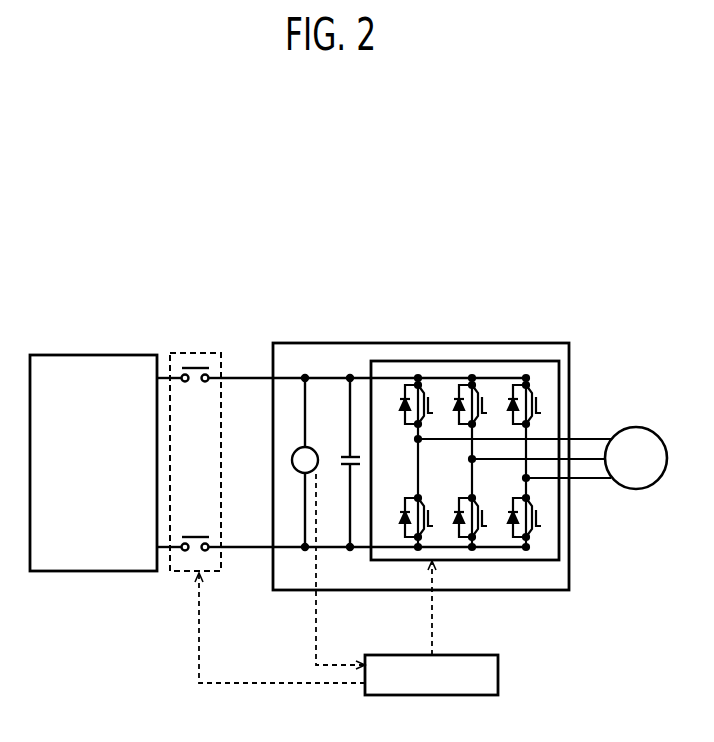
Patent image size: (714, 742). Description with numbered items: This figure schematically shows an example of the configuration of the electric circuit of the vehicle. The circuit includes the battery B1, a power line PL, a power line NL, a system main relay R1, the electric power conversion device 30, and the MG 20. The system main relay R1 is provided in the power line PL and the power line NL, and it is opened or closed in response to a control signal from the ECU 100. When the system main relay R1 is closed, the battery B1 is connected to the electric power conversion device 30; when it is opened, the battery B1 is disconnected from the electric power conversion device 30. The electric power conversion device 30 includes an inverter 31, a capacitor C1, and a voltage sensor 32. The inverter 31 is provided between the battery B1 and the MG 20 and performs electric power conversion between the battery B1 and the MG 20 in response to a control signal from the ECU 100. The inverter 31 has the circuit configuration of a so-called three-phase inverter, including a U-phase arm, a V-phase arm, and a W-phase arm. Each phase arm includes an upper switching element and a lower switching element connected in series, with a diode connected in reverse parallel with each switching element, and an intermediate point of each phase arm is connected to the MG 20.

The battery B1 is at (74, 354).
The system main relay R1 is at (198, 352).
The power line PL is at (247, 377).
The power line NL is at (247, 549).
The electric power conversion device 30 is at (525, 591).
The inverter 31 is at (482, 562).
The voltage sensor 32 is at (302, 448).
The capacitor C1 is at (347, 456).
The MG 20 is at (621, 431).
The ECU 100 is at (460, 654).